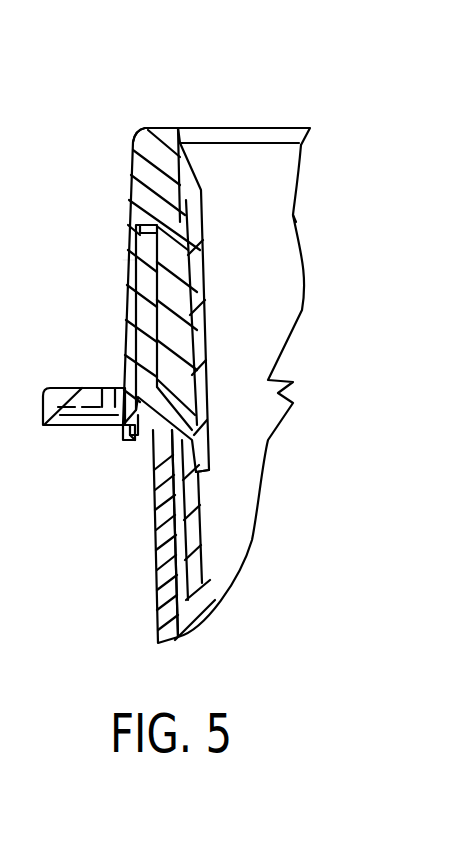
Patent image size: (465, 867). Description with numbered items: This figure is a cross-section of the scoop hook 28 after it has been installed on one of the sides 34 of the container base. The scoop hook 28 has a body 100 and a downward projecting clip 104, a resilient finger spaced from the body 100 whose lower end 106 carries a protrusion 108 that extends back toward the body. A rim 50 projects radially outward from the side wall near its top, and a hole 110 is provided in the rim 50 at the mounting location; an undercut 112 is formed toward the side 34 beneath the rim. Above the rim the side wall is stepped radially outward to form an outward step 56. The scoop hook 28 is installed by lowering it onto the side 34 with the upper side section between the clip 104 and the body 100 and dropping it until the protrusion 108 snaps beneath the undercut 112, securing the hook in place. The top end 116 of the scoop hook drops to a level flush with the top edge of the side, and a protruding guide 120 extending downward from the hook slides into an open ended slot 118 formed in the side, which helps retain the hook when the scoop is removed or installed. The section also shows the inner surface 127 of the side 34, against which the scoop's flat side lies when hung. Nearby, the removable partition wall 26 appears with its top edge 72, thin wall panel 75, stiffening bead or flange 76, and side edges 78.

The removable partition wall 26 is at (0, 125).
The scoop hook 28 is at (235, 330).
The sides 34 is at (160, 607).
The rim 50 is at (52, 388).
The outward step 56 is at (132, 408).
The top edge 72 is at (250, 128).
The wall panel 75 is at (285, 215).
The bead or flange 76 is at (300, 130).
The side edges 78 is at (185, 563).
The body 100 is at (203, 258).
The downward projecting clip 104 is at (107, 288).
The lower end 106 is at (118, 432).
The protrusion 108 is at (128, 433).
The hole 110 is at (112, 388).
The undercut 112 is at (130, 420).
The top end 116 is at (157, 128).
The open ended slot 118 is at (150, 222).
The protruding guide 120 is at (135, 222).
The inner surface 127 is at (205, 583).